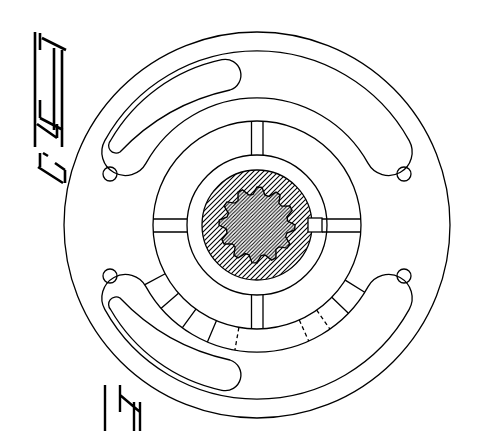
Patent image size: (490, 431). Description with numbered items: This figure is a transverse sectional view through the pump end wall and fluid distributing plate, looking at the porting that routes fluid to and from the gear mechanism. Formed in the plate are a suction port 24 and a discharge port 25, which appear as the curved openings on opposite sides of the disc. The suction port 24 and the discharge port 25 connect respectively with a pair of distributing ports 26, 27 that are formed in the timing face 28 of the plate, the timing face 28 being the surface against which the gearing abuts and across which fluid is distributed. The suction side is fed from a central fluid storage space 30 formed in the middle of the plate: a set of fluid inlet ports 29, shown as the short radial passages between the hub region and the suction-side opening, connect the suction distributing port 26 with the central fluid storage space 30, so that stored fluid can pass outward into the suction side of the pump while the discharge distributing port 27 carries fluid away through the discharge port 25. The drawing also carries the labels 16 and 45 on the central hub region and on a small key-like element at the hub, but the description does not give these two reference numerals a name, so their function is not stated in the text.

The splined hub 16 is at (237, 197).
The suction port 24 is at (357, 97).
The discharge port 25 is at (172, 100).
The distributing port 26 is at (357, 358).
The distributing port 27 is at (178, 355).
The timing face 28 is at (432, 200).
The fluid inlet ports 29 is at (330, 300).
The central fluid storage space 30 is at (345, 248).
The key 45 is at (300, 262).